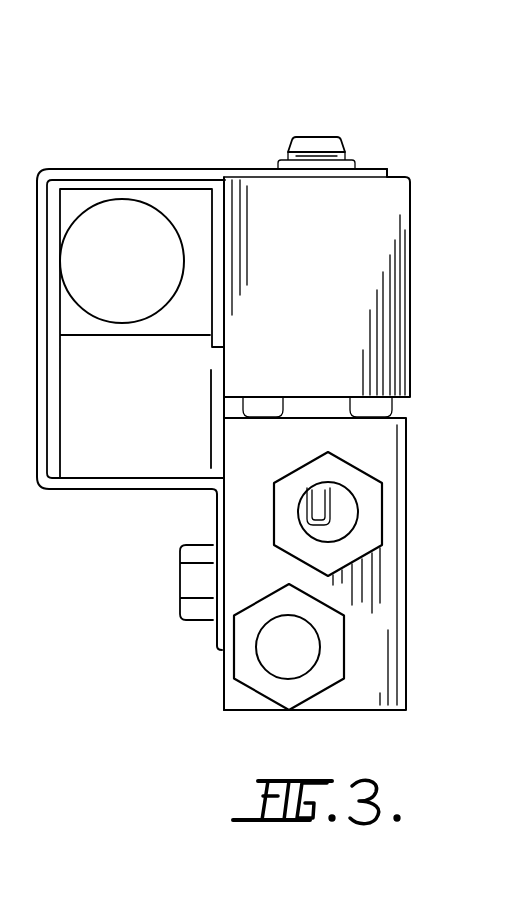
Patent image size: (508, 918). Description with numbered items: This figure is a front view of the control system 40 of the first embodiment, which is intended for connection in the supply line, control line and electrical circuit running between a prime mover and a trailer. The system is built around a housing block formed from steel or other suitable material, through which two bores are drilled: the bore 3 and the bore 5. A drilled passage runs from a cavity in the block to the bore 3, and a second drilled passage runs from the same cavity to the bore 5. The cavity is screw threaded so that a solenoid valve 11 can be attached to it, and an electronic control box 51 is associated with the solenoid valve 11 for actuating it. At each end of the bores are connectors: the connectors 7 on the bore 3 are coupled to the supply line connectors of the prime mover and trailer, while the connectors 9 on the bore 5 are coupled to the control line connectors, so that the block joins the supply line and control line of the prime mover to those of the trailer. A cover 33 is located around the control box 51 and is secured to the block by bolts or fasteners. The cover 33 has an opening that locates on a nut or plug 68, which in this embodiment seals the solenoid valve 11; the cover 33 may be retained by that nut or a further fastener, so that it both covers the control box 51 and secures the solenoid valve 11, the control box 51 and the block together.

The control system 40 is at (272, 387).
The electronic control box 51 is at (135, 198).
The nut or plug 68 is at (333, 147).
The solenoid valve 11 is at (420, 376).
The connector 9 is at (367, 492).
The bore 5 is at (350, 520).
The cover 33 is at (102, 483).
The connector 7 is at (243, 650).
The bore 3 is at (270, 658).